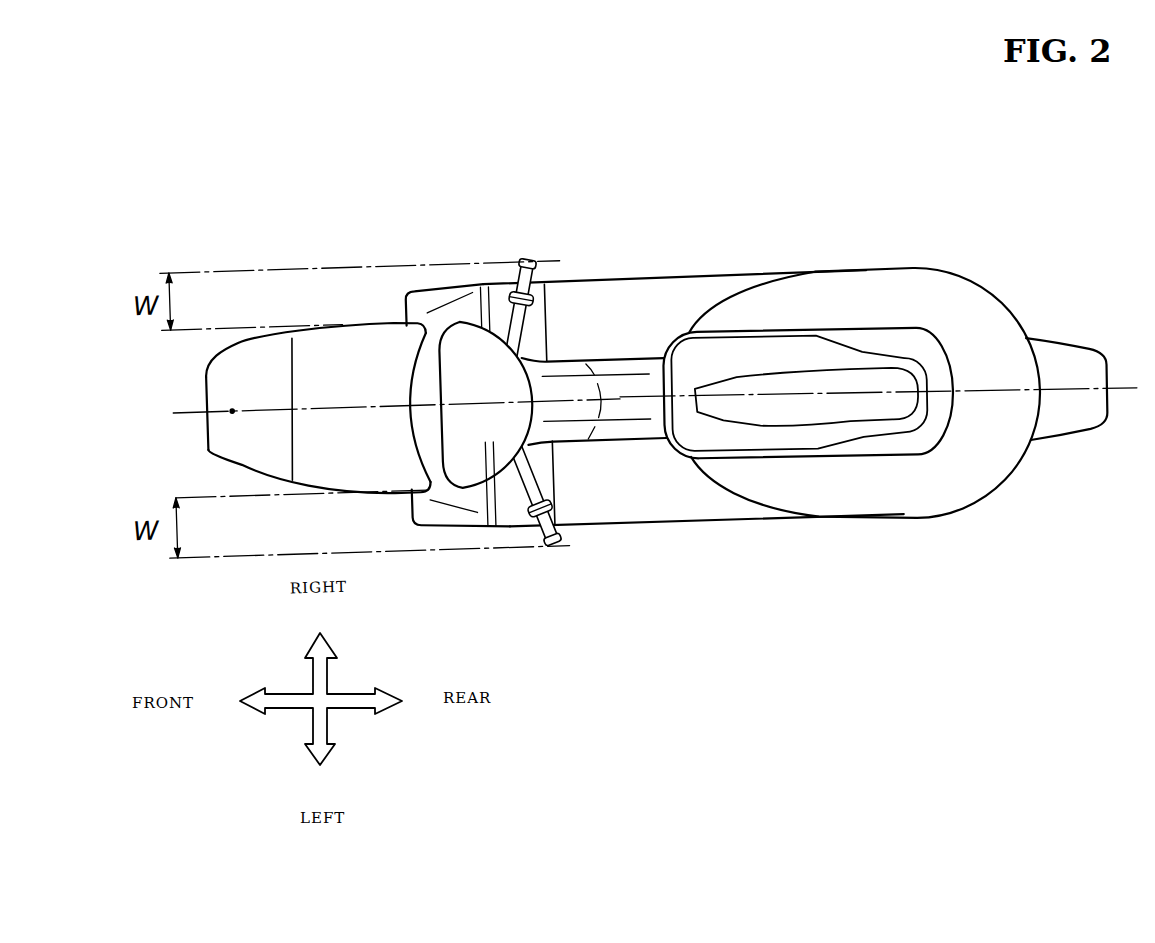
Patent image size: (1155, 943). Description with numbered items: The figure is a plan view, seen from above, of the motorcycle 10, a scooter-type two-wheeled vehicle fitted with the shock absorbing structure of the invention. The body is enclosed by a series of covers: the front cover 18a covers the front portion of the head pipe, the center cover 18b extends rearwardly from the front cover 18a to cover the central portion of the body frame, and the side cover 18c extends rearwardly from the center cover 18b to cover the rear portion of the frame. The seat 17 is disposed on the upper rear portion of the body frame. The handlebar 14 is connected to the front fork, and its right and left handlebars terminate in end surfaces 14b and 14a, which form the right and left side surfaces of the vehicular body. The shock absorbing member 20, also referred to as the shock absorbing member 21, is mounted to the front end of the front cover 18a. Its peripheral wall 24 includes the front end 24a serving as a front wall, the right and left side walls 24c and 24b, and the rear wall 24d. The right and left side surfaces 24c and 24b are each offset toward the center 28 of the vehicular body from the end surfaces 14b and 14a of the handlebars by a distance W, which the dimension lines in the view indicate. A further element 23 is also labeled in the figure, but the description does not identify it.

The motorcycle 10 is at (691, 387).
The handlebar 14 is at (556, 391).
The end surface of left handlebar 14a is at (548, 550).
The end surface of right handlebar 14b is at (533, 256).
The seat 17 is at (755, 386).
The front cover 18a is at (439, 325).
The center cover 18b is at (613, 369).
The side cover 18c is at (907, 295).
The shock absorbing member 20 is at (272, 352).
The shock absorbing member 21 is at (384, 312).
The center ridge of front cover 23 is at (259, 355).
The peripheral wall 24 is at (273, 401).
The front end 24a is at (207, 379).
The left side wall 24b is at (363, 486).
The right side wall 24c is at (359, 318).
The rear wall 24d is at (452, 361).
The center of the vehicular body 28 is at (232, 398).